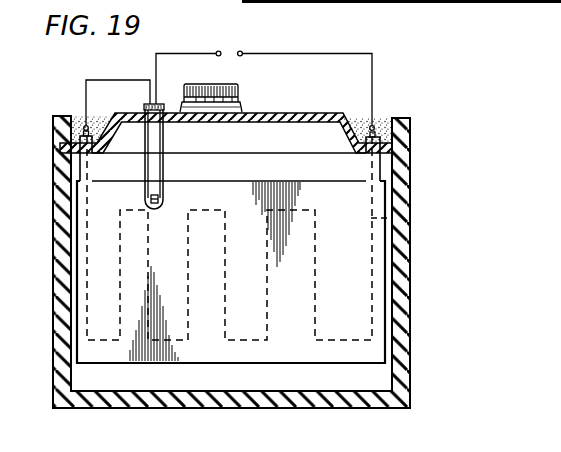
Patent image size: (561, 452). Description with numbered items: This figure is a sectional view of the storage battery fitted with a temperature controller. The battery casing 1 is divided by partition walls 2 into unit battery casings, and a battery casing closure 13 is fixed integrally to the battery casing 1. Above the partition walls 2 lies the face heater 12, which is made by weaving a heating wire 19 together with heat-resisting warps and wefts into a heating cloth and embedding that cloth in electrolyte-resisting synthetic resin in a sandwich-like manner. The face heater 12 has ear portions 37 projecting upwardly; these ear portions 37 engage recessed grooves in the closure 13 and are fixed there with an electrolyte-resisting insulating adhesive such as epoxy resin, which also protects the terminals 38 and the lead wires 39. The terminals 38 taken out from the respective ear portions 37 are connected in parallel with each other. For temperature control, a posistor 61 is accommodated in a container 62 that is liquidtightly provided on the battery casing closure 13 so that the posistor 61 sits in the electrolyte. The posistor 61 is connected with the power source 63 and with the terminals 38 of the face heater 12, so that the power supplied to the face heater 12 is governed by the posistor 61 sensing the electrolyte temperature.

The battery casing 1 is at (410, 257).
The partition wall 2 is at (388, 192).
The face heater 12 is at (378, 297).
The battery casing closure 13 is at (265, 112).
The heating wire 19 is at (393, 221).
The ear portion 37 is at (373, 163).
The terminal 38 is at (371, 125).
The lead wire 39 is at (386, 118).
The posistor 61 is at (151, 211).
The container 62 is at (163, 135).
The power source 63 is at (229, 47).